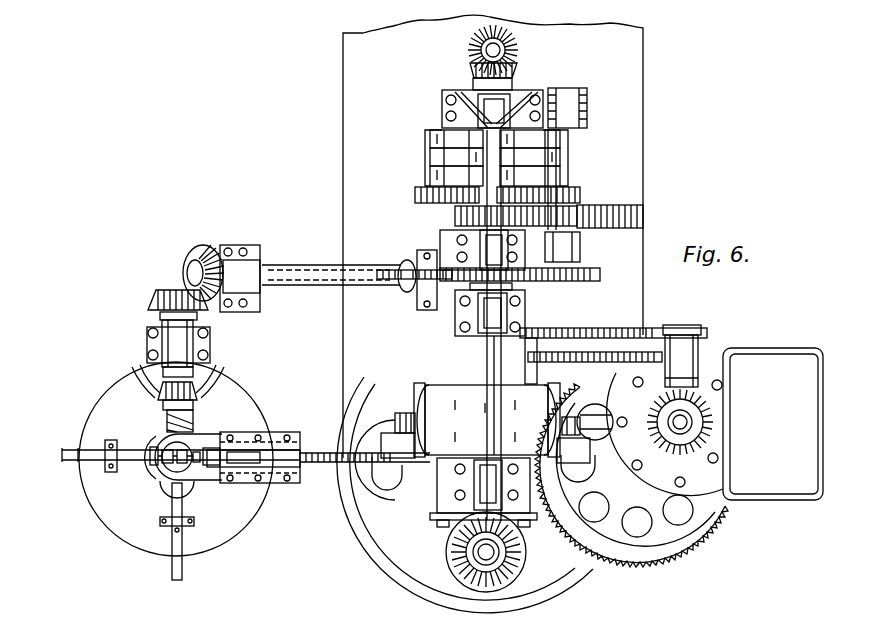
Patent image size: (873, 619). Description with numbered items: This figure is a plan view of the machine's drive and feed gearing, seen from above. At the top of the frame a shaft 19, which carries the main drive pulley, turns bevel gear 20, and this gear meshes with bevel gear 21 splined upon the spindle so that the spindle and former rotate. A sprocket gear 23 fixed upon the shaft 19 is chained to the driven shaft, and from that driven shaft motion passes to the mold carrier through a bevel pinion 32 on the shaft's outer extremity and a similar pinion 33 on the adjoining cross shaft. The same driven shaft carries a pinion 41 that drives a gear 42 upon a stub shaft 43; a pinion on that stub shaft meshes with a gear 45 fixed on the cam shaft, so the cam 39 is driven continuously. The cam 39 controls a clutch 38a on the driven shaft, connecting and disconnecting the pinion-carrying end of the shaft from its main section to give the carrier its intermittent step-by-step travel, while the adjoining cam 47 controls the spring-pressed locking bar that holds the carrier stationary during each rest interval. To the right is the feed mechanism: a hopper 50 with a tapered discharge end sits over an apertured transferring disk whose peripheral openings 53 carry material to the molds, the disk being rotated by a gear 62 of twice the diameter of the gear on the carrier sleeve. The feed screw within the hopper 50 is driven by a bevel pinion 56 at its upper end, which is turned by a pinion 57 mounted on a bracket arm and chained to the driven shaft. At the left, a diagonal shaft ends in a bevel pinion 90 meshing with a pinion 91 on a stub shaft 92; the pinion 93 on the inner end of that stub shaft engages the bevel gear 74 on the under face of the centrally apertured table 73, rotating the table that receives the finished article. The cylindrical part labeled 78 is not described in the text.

The bevel pinion 33 is at (517, 50).
The bevel pinion 32 is at (513, 72).
The cam 39 is at (570, 133).
The cam 47 is at (560, 160).
The clutch 38a is at (560, 176).
The stub shaft 43 is at (560, 191).
The gear 45 is at (415, 194).
The pinion 41 is at (477, 212).
The gear 42 is at (643, 215).
The sprocket gear 23 is at (513, 285).
The shaft 19 is at (460, 363).
The cylinder 78 is at (420, 393).
The bevel gear 20 is at (453, 527).
The bevel gear 21 is at (452, 567).
The apertures 53 is at (603, 508).
The pinion 57 is at (707, 398).
The bevel pinion 56 is at (713, 420).
The hopper 50 is at (769, 493).
The gear 62 is at (697, 537).
The bevel pinion 90 is at (198, 245).
The pinion 91 is at (167, 288).
The bevel gear 74 is at (147, 380).
The stub shaft 92 is at (193, 373).
The pinion 93 is at (200, 383).
The table 73 is at (113, 393).